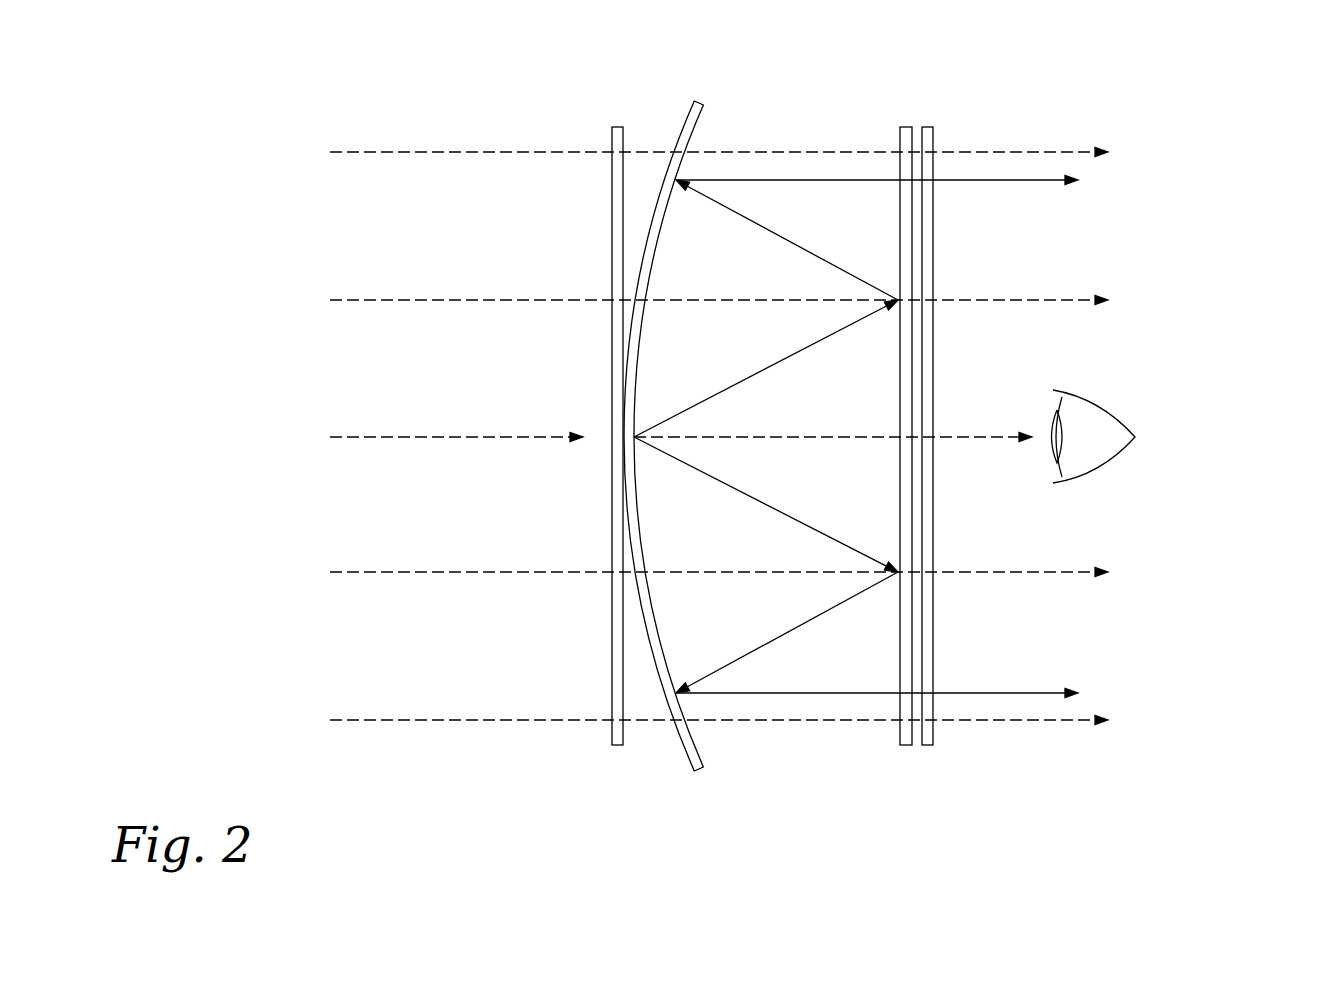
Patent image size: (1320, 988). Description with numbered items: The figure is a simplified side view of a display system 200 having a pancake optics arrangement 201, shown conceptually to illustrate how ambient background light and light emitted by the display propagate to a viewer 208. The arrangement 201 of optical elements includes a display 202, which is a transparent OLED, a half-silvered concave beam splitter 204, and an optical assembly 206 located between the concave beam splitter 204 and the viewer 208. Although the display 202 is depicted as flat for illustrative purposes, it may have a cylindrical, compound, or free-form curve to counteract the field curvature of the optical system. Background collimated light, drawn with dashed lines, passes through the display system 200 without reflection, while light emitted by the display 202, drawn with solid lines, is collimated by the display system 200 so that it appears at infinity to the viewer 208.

The display system 200 is at (1160, 86).
The pancake optics arrangement 201 is at (837, 470).
The display 202 is at (612, 225).
The concave beam splitter 204 is at (703, 748).
The optical assembly 206 is at (943, 107).
The viewer 208 is at (1150, 393).